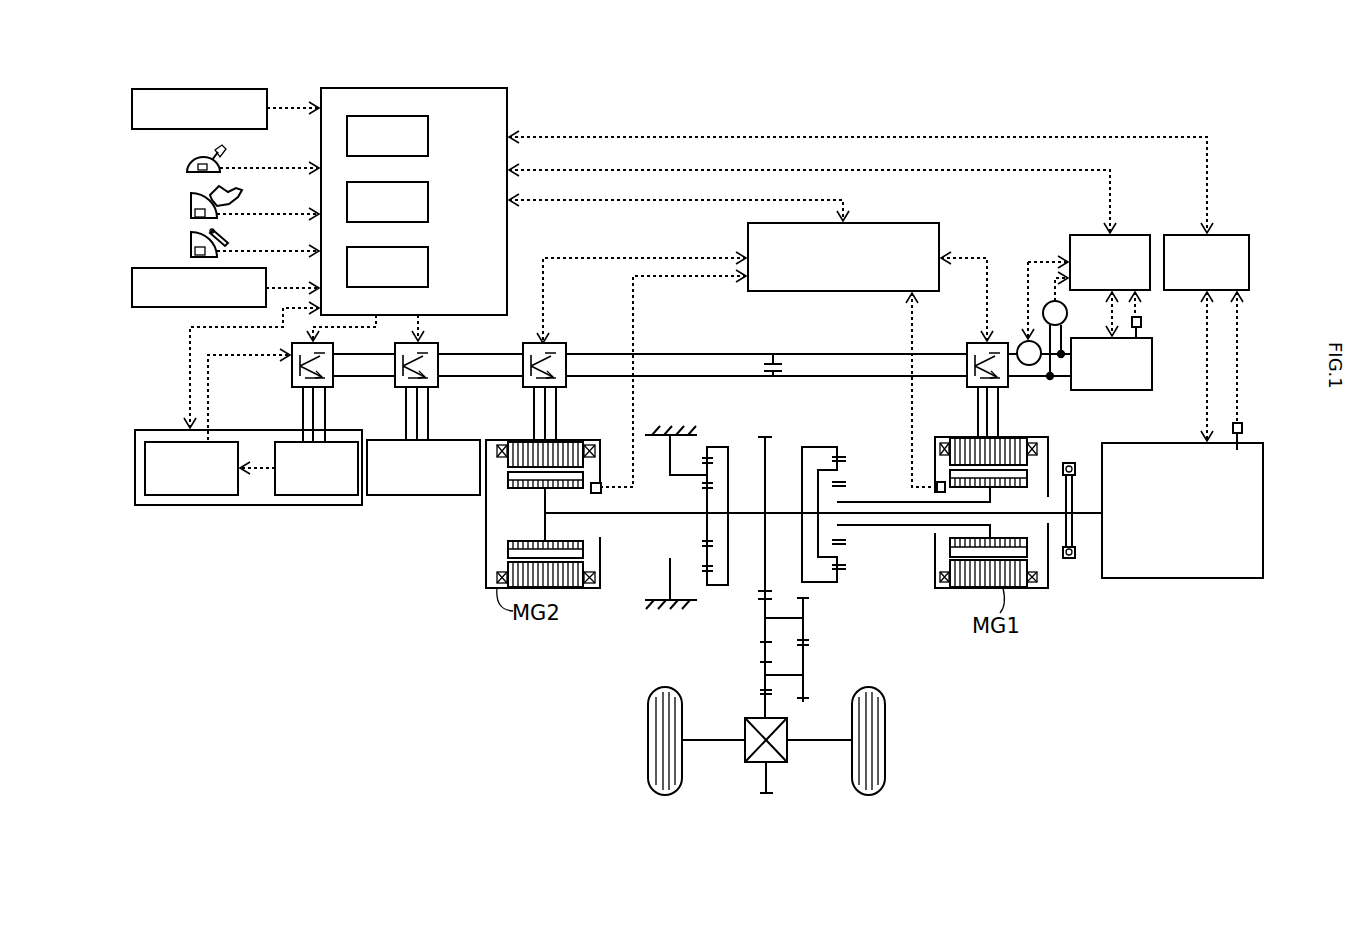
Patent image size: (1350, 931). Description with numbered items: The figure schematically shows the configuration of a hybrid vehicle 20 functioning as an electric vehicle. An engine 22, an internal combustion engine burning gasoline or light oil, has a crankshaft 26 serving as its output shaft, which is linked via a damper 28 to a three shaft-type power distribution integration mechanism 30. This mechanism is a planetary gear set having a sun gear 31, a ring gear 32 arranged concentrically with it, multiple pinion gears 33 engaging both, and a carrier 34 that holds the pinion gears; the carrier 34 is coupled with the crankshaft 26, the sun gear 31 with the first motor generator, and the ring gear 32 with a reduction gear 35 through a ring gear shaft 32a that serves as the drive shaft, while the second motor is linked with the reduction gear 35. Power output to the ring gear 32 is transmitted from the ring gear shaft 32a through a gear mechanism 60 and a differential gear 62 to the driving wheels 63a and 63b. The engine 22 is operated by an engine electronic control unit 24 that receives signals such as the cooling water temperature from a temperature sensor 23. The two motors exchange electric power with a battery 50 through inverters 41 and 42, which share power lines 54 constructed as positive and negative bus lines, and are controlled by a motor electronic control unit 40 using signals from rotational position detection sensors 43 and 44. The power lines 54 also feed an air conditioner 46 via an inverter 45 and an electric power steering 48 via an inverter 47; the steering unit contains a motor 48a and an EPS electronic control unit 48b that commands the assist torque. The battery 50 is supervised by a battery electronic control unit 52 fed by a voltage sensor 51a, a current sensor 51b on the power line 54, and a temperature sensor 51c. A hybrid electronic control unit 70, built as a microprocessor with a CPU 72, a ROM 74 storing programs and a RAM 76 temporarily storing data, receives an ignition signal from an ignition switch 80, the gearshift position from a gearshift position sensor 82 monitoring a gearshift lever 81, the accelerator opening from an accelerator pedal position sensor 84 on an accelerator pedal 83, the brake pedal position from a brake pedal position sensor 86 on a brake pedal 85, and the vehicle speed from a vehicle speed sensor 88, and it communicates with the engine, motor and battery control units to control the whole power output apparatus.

The hybrid vehicle 20 is at (1019, 110).
The engine 22 is at (1264, 478).
The temperature sensor 23 is at (1243, 427).
The engine electronic control unit 24 is at (1227, 235).
The crankshaft 26 is at (1085, 514).
The damper 28 is at (1072, 560).
The power distribution integration mechanism 30 is at (896, 500).
The sun gear 31 is at (845, 530).
The ring gear 32 is at (845, 577).
The ring gear shaft 32a is at (748, 513).
The pinion gears 33 is at (845, 552).
The carrier 34 is at (812, 480).
The reduction gear 35 is at (713, 424).
The motor electronic control unit 40 is at (882, 223).
The inverter 41 is at (983, 341).
The inverter 42 is at (562, 344).
The rotational position detection sensor 43 is at (936, 482).
The rotational position detection sensor 44 is at (597, 483).
The inverter 45 is at (436, 343).
The air conditioner 46 is at (442, 440).
The inverter 47 is at (292, 365).
The electric power steering 48 is at (241, 429).
The motor 48a is at (315, 496).
The EPS electronic control unit 48b is at (187, 496).
The battery 50 is at (1110, 391).
The voltage sensor 51a is at (1045, 305).
The current sensor 51b is at (1030, 367).
The temperature sensor 51c is at (1142, 321).
The battery electronic control unit 52 is at (1088, 235).
The power lines 54 is at (827, 373).
The gear mechanism 60 is at (845, 654).
The differential gear 62 is at (787, 752).
The driving wheel 63a is at (648, 773).
The driving wheel 63b is at (885, 773).
The hybrid electronic control unit 70 is at (413, 88).
The CPU 72 is at (428, 136).
The ROM 74 is at (428, 203).
The RAM 76 is at (428, 268).
The ignition switch 80 is at (132, 99).
The gearshift lever 81 is at (215, 151).
The gearshift position sensor 82 is at (192, 154).
The accelerator pedal 83 is at (213, 194).
The accelerator pedal position sensor 84 is at (192, 205).
The brake pedal 85 is at (211, 234).
The brake pedal position sensor 86 is at (192, 250).
The vehicle speed sensor 88 is at (132, 283).